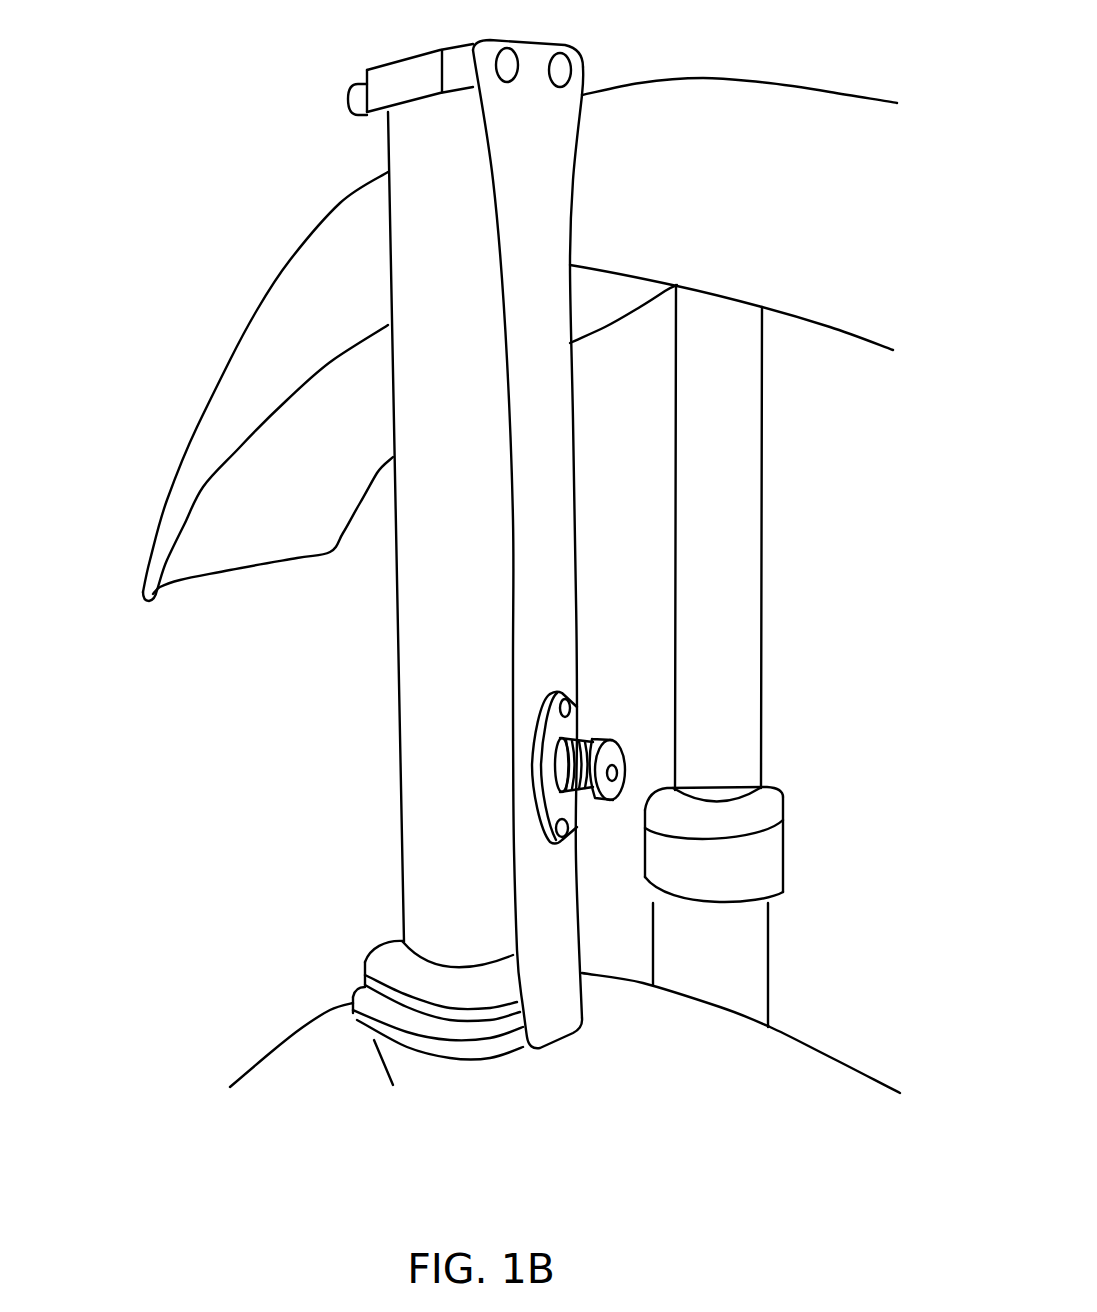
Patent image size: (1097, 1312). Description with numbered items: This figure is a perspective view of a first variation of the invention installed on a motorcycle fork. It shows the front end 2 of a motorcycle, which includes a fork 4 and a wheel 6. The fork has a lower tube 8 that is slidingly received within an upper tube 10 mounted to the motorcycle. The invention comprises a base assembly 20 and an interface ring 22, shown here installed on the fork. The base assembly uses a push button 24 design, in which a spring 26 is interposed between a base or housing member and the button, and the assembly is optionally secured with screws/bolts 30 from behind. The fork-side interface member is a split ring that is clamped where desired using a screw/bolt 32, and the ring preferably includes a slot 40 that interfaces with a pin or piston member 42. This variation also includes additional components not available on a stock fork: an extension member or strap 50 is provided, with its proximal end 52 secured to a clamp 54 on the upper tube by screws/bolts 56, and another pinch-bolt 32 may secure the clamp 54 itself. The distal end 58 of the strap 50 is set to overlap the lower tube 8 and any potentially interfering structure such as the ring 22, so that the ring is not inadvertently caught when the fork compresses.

The front end 2 is at (170, 376).
The fork 4 is at (343, 802).
The wheel 6 is at (699, 722).
The lower tube 8 is at (447, 1072).
The upper tube 10 is at (435, 817).
The base assembly 20 is at (729, 711).
The interface ring 22 is at (402, 1043).
The push button 24 is at (615, 802).
The spring 26 is at (565, 800).
The screws/bolts 30 is at (570, 705).
The screw/bolt 32 is at (360, 87).
The slot 40 is at (505, 1068).
The pin or piston member 42 is at (583, 765).
The extension member or strap 50 is at (553, 510).
The proximal end 52 is at (696, 532).
The clamp 54 is at (283, 87).
The screws/bolts 56 is at (513, 63).
The distal end 58 is at (556, 986).